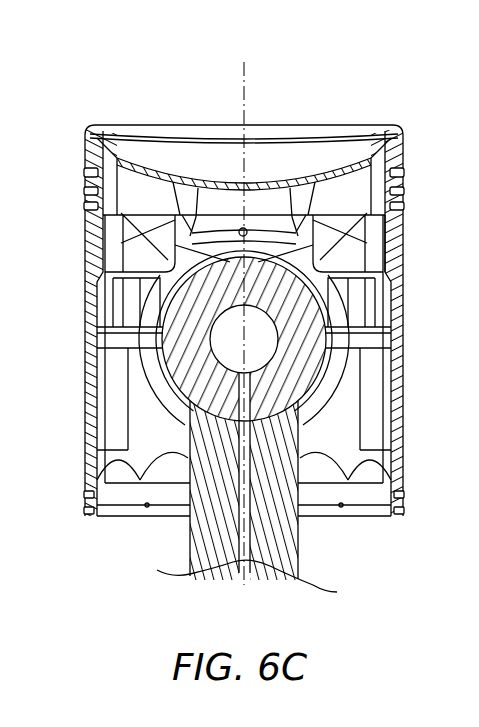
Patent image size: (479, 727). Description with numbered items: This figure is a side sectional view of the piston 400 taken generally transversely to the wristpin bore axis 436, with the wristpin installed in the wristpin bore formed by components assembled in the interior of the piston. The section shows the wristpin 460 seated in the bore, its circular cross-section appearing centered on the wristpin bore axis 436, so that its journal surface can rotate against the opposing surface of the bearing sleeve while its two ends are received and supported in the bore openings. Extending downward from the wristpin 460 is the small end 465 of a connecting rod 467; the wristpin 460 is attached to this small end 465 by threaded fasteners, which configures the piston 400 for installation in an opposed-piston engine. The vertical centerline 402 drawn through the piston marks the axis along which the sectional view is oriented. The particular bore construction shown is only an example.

The piston 400 is at (93, 118).
The central axis 402 is at (244, 80).
The wristpin bore axis 436 is at (243, 339).
The wristpin 460 is at (300, 365).
The small end 465 is at (193, 470).
The connecting rod 467 is at (298, 545).